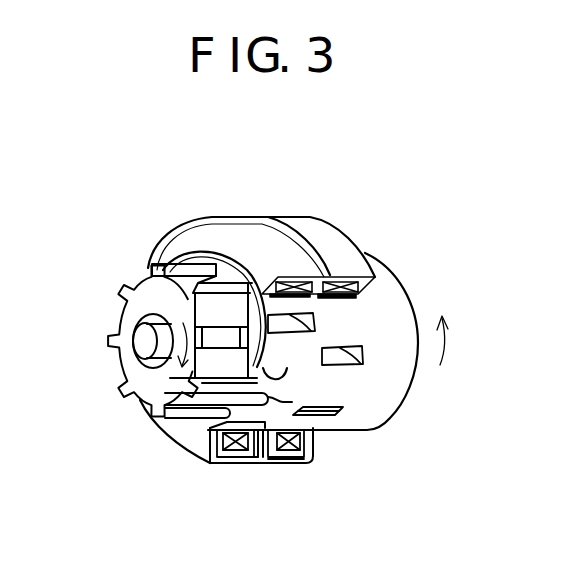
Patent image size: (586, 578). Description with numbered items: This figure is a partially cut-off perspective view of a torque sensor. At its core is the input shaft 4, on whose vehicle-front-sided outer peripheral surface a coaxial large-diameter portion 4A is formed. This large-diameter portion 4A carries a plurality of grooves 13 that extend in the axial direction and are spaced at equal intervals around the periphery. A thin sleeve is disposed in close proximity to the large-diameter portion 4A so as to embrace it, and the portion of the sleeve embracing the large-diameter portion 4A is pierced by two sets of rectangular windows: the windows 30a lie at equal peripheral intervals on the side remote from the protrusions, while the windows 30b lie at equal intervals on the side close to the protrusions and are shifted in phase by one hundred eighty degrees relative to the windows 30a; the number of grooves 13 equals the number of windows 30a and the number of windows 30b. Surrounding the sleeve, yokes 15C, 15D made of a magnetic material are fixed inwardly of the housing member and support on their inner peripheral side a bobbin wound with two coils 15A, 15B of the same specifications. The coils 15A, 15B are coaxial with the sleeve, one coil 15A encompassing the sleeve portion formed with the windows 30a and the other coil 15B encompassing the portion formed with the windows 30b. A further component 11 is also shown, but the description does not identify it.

The input shaft 4 is at (130, 367).
The large-diameter portion 4A is at (233, 337).
The shaft 11 is at (143, 342).
The grooves 13 is at (182, 405).
The coil 15A is at (235, 452).
The coil 15B is at (293, 452).
The yoke 15C is at (245, 457).
The yoke 15D is at (285, 458).
The rectangular windows 30a is at (343, 413).
The rectangular windows 30b is at (320, 350).